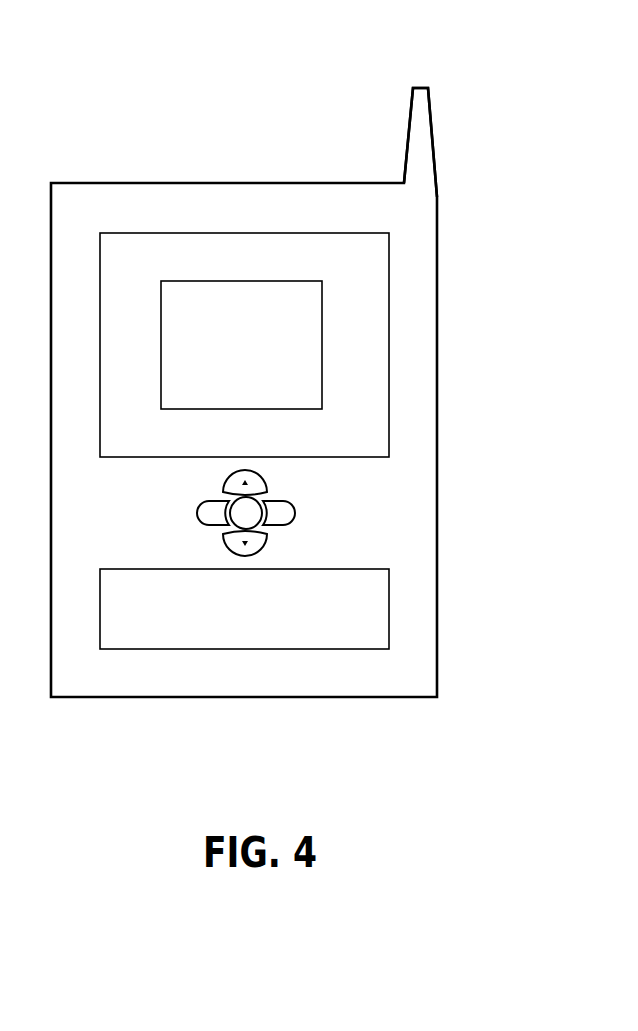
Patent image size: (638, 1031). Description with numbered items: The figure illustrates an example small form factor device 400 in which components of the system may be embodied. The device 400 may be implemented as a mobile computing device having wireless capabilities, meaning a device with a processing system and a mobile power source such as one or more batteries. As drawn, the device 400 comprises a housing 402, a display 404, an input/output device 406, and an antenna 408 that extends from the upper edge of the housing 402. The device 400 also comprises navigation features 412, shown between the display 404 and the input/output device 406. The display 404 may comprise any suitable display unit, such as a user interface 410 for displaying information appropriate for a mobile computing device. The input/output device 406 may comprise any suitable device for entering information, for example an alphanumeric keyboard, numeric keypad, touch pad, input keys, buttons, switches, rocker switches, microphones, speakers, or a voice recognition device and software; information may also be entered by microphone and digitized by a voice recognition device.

The small form factor device 400 is at (299, 354).
The housing 402 is at (438, 440).
The display 404 is at (390, 248).
The input/output (I/O) device 406 is at (390, 600).
The antenna 408 is at (408, 129).
The user interface 410 is at (323, 344).
The navigation features 412 is at (304, 505).